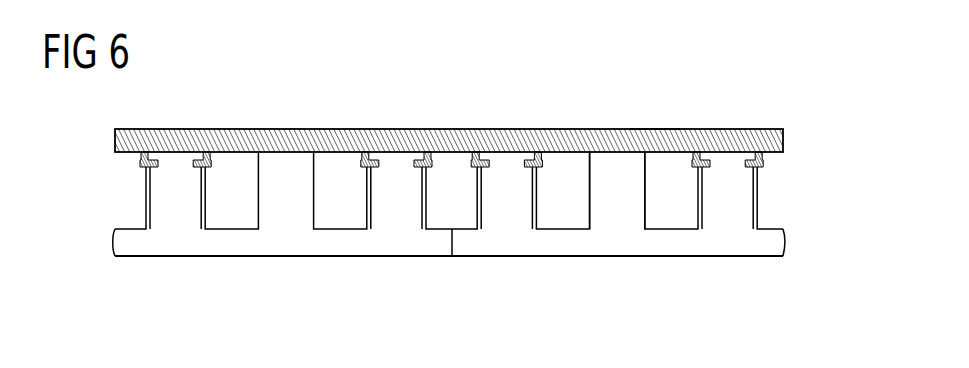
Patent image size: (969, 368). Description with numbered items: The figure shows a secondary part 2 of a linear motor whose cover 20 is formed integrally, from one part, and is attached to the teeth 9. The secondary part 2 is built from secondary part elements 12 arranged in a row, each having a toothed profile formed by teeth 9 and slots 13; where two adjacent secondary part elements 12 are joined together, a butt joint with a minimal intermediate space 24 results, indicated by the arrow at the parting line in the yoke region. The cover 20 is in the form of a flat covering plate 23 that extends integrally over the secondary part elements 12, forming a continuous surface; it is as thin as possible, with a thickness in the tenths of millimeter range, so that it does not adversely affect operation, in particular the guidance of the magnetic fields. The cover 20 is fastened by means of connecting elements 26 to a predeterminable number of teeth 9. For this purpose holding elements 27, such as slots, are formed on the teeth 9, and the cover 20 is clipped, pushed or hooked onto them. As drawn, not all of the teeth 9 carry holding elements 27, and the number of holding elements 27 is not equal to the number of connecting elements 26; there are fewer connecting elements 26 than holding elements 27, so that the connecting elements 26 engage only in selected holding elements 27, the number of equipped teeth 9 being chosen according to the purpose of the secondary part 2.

The secondary part 2 is at (781, 80).
The teeth 9 is at (506, 220).
The secondary part element 12 is at (188, 258).
The slots 13 is at (337, 213).
The cover 20 is at (558, 128).
The covering plate 23 is at (655, 92).
The intermediate space 24 is at (452, 277).
The connecting elements 26 is at (364, 158).
The holding elements 27 is at (486, 156).